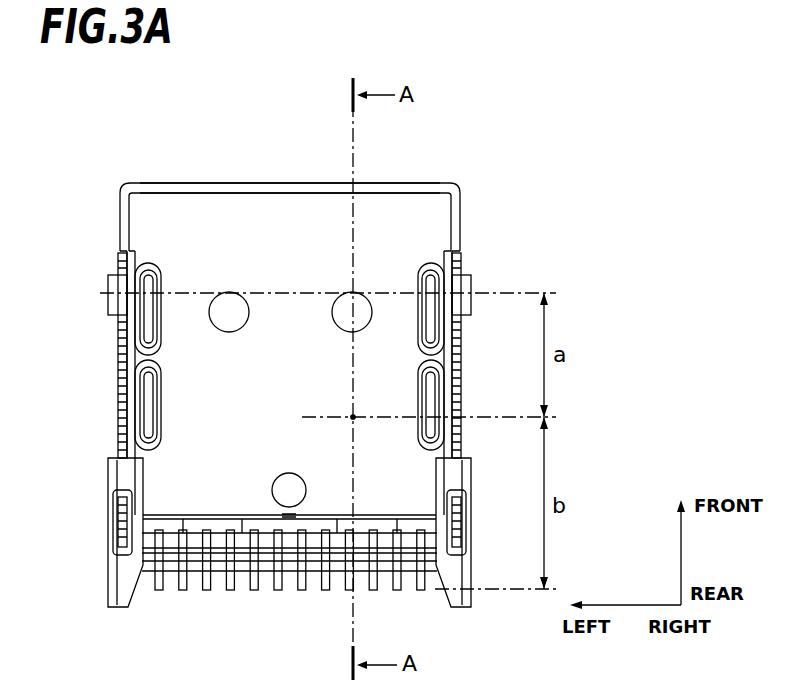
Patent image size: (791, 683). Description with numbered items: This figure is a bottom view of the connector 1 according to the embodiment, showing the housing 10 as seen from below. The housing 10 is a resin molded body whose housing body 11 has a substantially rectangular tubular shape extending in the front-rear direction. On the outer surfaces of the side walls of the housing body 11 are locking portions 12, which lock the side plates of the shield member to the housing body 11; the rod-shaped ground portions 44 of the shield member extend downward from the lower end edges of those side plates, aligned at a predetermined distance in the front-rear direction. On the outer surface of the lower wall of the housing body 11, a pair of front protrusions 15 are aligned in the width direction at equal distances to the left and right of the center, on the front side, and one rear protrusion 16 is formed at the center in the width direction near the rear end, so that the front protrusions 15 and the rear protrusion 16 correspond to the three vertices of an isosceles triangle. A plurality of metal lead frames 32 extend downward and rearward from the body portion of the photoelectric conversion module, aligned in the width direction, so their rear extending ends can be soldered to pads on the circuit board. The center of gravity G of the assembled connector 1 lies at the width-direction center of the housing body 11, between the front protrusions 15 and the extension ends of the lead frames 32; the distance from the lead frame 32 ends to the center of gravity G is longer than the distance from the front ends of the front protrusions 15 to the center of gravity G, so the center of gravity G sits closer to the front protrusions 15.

The connector 1 is at (456, 112).
The housing 10 is at (470, 198).
The housing body 11 is at (276, 183).
The locking portion 12 is at (113, 293).
The front protrusions 15 is at (228, 324).
The rear protrusion 16 is at (280, 478).
The lead frames 32 is at (230, 592).
The ground portions 44 is at (116, 407).
The center of gravity G is at (356, 421).